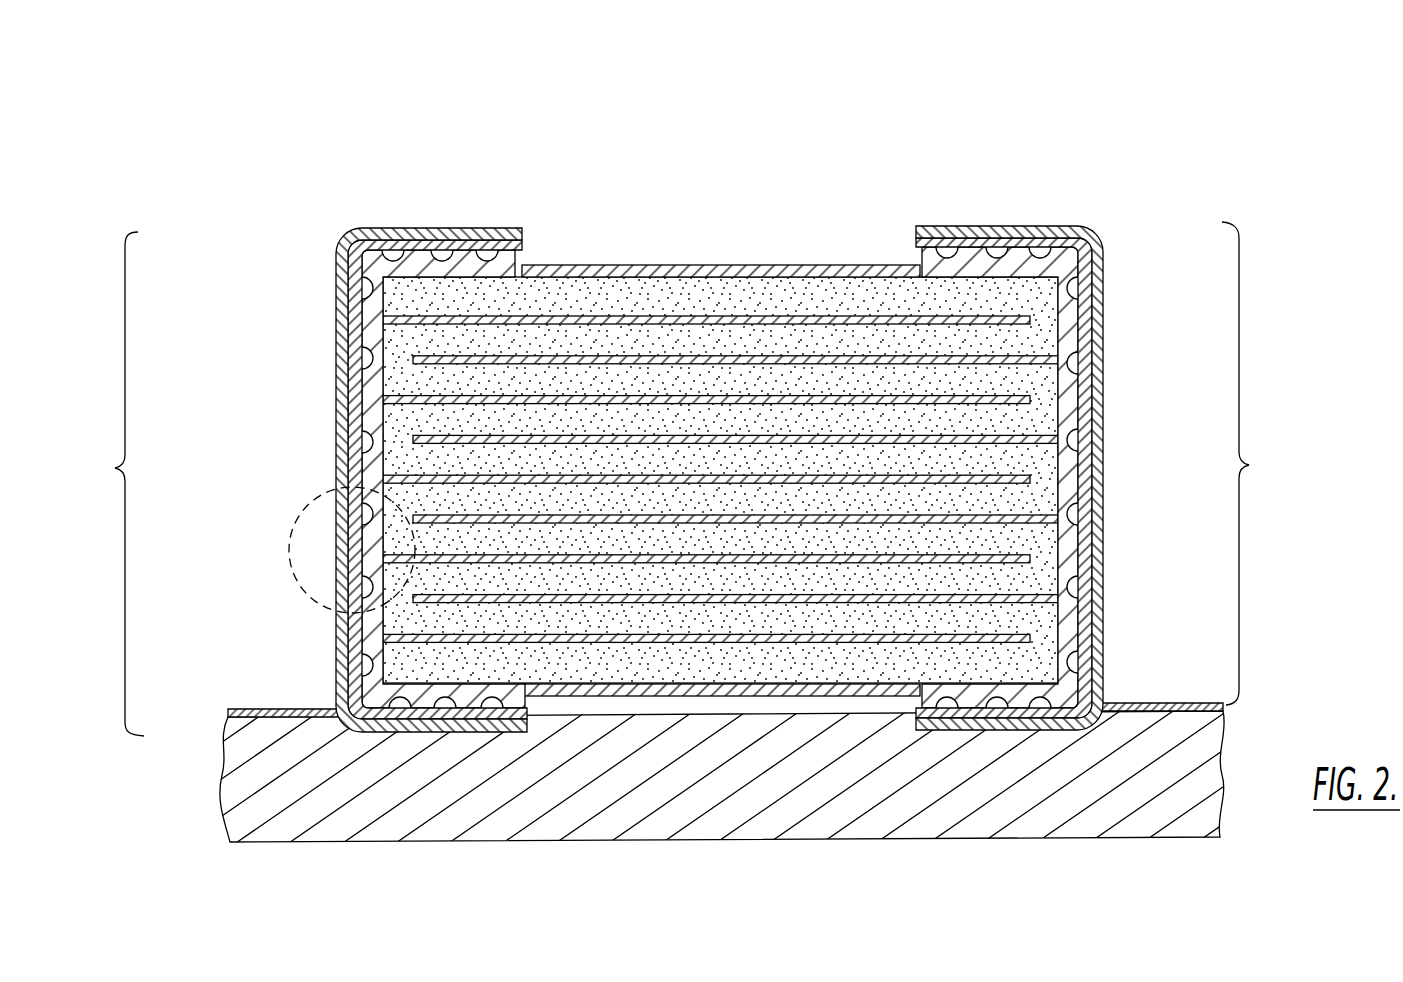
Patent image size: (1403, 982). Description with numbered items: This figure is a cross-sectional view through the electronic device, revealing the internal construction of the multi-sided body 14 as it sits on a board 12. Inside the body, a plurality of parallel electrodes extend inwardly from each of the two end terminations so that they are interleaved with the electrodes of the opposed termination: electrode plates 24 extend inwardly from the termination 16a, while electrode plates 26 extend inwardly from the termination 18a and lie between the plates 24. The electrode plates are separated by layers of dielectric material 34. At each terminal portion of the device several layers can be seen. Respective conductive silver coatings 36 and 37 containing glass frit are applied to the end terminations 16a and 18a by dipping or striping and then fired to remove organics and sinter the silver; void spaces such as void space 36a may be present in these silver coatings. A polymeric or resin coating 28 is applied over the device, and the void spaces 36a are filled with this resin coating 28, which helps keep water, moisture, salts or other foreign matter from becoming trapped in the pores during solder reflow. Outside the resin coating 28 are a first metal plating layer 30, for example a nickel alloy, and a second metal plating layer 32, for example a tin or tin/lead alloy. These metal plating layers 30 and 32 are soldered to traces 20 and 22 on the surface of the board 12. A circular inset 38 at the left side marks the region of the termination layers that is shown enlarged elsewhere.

The board 12 is at (958, 840).
The multi-sided body 14 is at (670, 128).
The termination 16a is at (108, 484).
The termination 18a is at (1258, 463).
The trace 20 is at (268, 708).
The trace 22 is at (1170, 703).
The electrode plates 24 is at (634, 478).
The electrode plates 26 is at (852, 518).
The resin coating 28 is at (420, 253).
The first metal plating layer 30 is at (343, 283).
The second metal plating layer 32 is at (341, 250).
The dielectric material 34 is at (648, 297).
The conductive silver coating 36 is at (383, 402).
The void space 36a is at (362, 442).
The conductive silver coating 37 is at (1062, 438).
The circular inset 38 is at (289, 543).